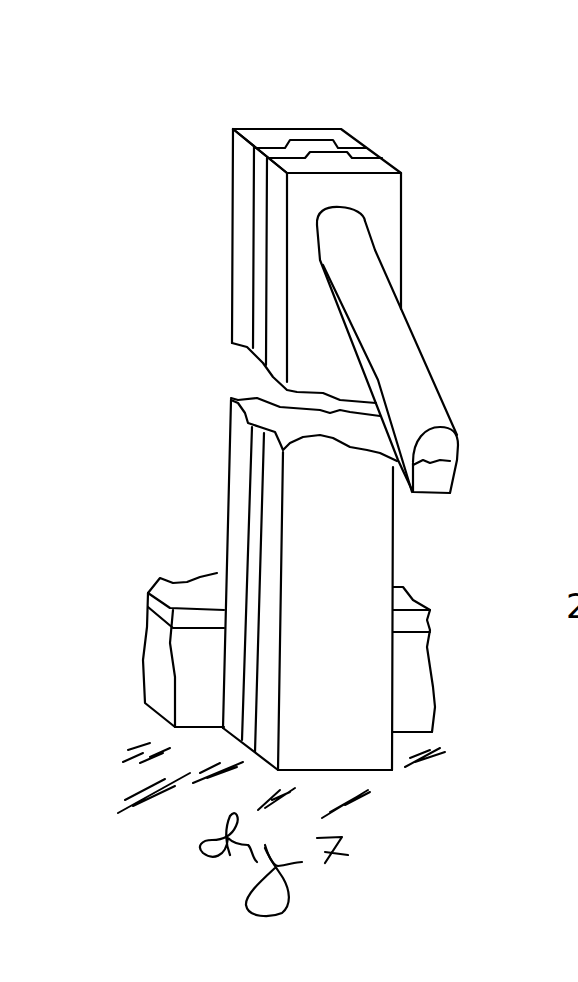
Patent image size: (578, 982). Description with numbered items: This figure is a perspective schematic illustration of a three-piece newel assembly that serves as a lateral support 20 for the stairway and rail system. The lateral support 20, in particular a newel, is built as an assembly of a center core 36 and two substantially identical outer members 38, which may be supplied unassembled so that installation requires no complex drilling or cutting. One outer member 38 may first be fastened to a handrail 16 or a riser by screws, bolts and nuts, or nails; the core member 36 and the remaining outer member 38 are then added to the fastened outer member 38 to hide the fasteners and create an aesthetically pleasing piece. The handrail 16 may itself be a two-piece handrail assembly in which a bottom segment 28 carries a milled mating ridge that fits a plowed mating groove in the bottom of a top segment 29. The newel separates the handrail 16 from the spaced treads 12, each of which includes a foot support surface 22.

The spaced treads 12 is at (150, 603).
The handrail 16 is at (400, 340).
The lateral support 20 is at (228, 277).
The foot support surface 22 is at (407, 597).
The bottom segment 28 is at (442, 480).
The top segment 29 is at (445, 440).
The center core 36 is at (364, 147).
The outer members 38 is at (341, 129).